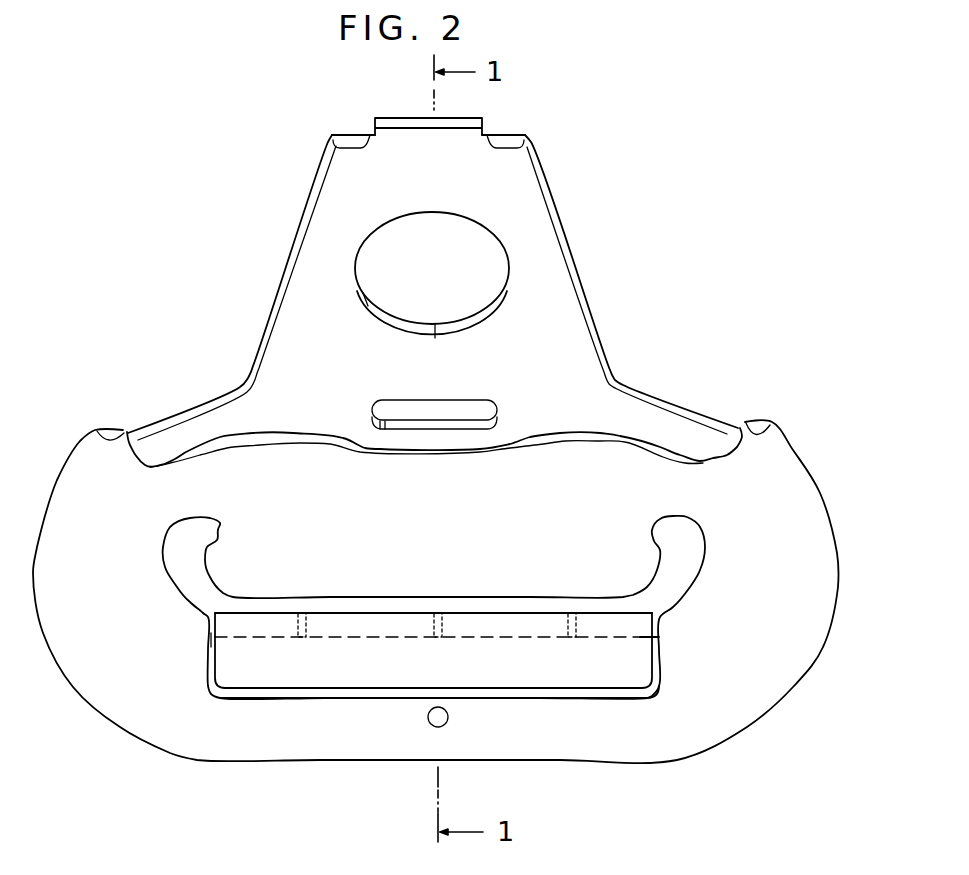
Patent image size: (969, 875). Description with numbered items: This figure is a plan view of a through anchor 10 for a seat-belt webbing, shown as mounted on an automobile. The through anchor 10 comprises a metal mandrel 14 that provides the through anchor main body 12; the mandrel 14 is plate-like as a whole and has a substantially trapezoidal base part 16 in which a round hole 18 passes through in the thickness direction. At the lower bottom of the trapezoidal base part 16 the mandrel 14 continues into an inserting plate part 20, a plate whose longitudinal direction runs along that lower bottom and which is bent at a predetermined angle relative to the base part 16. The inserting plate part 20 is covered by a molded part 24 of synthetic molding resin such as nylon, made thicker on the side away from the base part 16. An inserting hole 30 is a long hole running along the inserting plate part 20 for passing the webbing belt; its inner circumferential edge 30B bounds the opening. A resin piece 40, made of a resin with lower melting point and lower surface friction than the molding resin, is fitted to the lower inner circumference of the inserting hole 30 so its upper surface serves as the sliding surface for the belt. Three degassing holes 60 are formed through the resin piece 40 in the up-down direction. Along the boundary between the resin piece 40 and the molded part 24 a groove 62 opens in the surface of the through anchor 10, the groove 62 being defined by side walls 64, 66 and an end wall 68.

The through anchor 10 is at (633, 155).
The through anchor main body 12 is at (627, 333).
The mandrel 14 is at (580, 273).
The base part 16 is at (527, 217).
The round hole 18 is at (475, 230).
The inserting plate part 20 is at (683, 425).
The molded part 24 is at (778, 458).
The inserting hole 30 is at (492, 600).
The slot edge 30B is at (546, 598).
The resin piece 40 is at (675, 600).
The degassing hole 60 is at (583, 605).
The groove 62 is at (520, 691).
The side wall 64 is at (590, 690).
The side wall 66 is at (638, 684).
The end wall 68 is at (478, 697).